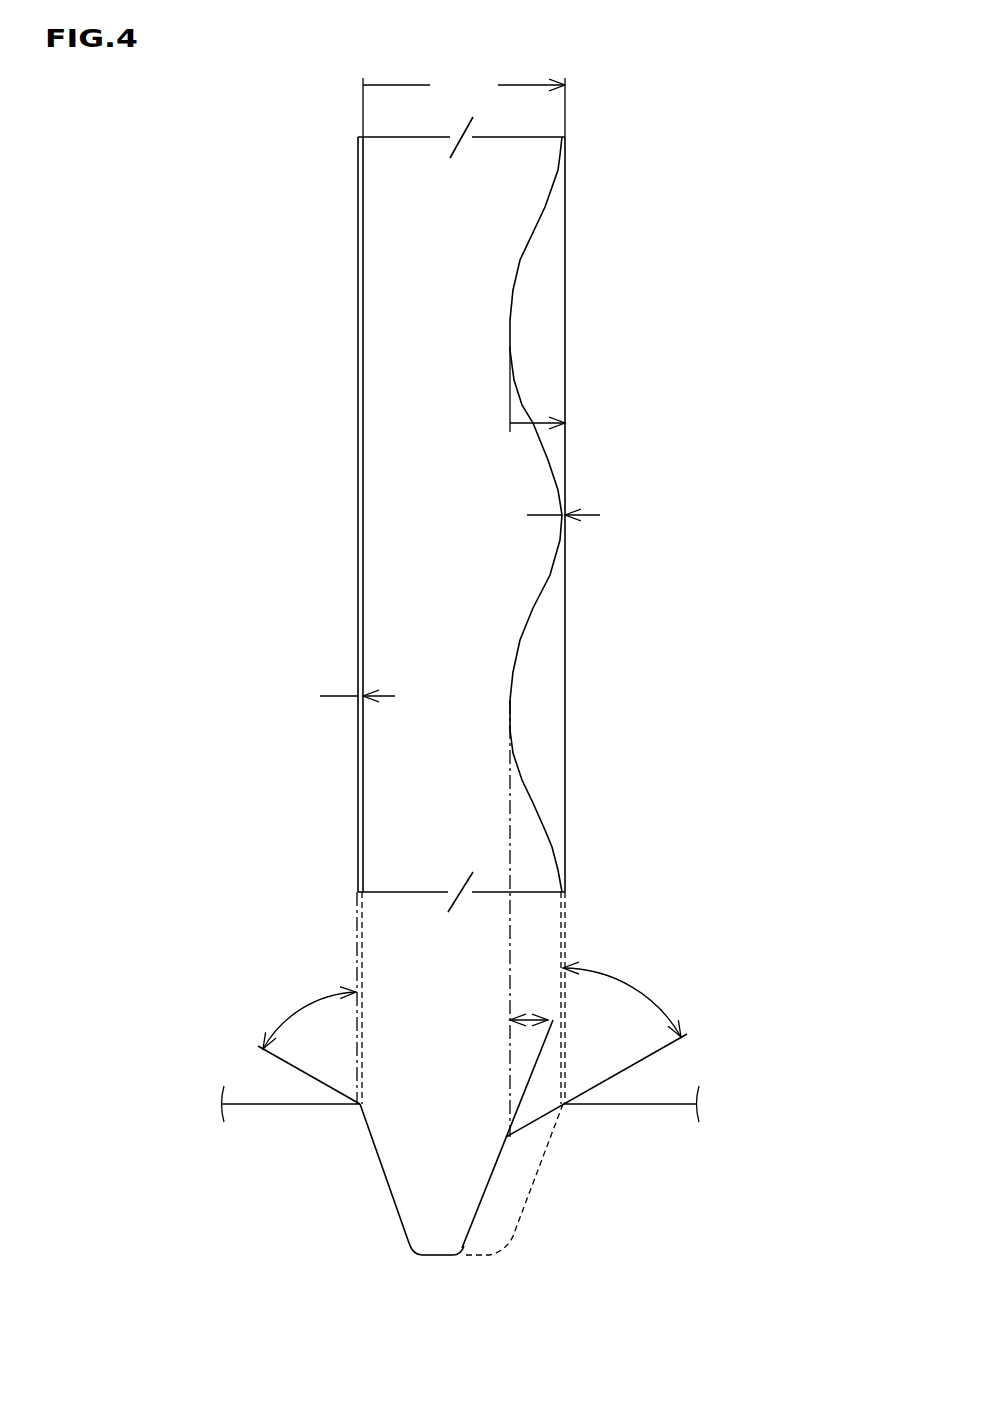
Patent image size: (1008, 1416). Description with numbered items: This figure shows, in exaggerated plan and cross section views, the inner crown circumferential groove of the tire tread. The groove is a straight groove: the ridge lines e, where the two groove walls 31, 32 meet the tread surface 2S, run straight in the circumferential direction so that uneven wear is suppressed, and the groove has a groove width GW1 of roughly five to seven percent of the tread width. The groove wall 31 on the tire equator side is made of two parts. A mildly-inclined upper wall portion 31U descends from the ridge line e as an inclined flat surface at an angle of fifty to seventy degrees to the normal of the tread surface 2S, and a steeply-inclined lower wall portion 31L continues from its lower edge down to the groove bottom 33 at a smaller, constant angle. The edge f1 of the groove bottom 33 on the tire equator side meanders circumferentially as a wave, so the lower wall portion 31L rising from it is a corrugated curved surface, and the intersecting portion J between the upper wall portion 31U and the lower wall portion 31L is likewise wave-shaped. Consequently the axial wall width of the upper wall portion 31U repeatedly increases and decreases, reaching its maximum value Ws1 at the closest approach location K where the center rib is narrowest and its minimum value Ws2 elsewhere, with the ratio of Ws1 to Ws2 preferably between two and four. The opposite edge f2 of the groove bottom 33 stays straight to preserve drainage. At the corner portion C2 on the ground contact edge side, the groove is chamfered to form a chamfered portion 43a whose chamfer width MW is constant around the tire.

The closest approach location K is at (598, 323).
The chamfered portion 43a is at (357, 782).
The ridge line e is at (357, 607).
The upper wall portion 31U is at (542, 285).
The lower wall portion 31L is at (484, 1160).
The groove wall 31 is at (688, 1135).
The intersecting portion J is at (512, 701).
The tread surface 2S is at (675, 1104).
The groove wall 32 is at (383, 1177).
The groove bottom 33 is at (444, 1255).
The edge f1 is at (471, 1258).
The edge f2 is at (409, 1256).
The corner portion C2 is at (293, 1118).
The groove width GW1 is at (464, 104).
The maximum value of wall width Ws1 is at (538, 421).
The minimum value of wall width Ws2 is at (587, 500).
The chamfer width MW is at (342, 682).